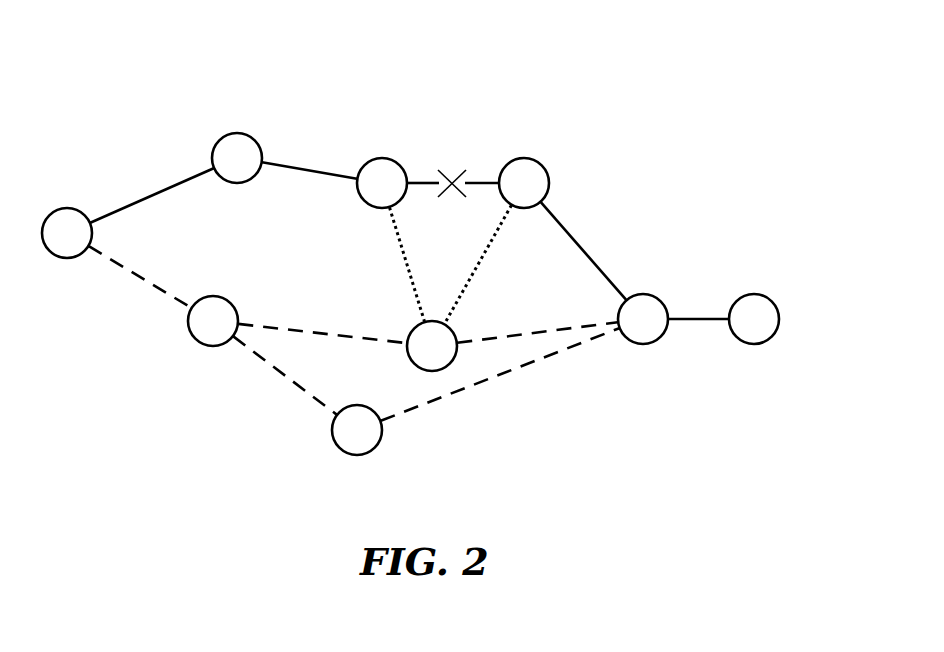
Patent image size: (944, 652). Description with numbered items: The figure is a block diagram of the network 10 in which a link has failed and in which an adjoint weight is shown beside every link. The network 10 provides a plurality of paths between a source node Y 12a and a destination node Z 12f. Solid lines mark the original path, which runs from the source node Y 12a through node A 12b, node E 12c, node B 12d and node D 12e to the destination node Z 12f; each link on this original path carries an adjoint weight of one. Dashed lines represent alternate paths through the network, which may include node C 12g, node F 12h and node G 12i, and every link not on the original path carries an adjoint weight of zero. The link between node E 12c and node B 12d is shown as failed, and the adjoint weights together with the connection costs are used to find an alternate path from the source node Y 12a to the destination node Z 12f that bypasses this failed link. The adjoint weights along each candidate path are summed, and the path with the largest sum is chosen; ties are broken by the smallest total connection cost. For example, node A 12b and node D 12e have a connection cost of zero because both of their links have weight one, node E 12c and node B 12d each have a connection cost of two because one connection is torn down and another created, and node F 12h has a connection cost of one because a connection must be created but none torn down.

The network 10 is at (487, 63).
The source node Y 12a is at (68, 207).
The node A 12b is at (247, 133).
The node E 12c is at (388, 157).
The node B 12d is at (530, 157).
The node D 12e is at (652, 290).
The destination node Z 12f is at (762, 290).
The node C 12g is at (220, 293).
The node F 12h is at (458, 340).
The node G 12i is at (340, 453).